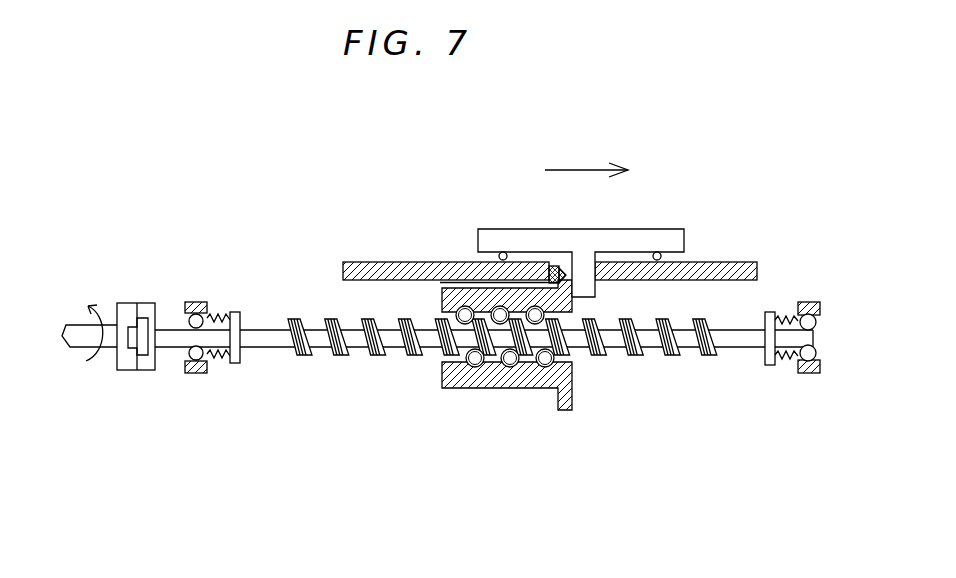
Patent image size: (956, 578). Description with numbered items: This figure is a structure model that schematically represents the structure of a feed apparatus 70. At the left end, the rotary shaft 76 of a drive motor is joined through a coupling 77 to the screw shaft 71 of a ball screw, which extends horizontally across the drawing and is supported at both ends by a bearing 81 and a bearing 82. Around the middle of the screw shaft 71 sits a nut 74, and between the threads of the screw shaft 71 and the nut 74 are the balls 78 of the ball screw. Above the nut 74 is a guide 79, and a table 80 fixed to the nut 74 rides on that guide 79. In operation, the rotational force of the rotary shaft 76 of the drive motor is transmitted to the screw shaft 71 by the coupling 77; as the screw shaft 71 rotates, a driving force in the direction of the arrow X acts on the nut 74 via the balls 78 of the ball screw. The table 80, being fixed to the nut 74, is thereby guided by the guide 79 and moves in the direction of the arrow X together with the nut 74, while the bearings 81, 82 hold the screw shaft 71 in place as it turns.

The feed apparatus 70 is at (264, 169).
The screw shaft 71 is at (300, 319).
The nut 74 is at (572, 383).
The rotary shaft 76 is at (77, 348).
The coupling 77 is at (130, 302).
The ball 78 is at (440, 306).
The guide 79 is at (412, 262).
The table 80 is at (499, 229).
The bearing 81 is at (217, 373).
The bearing 82 is at (792, 383).